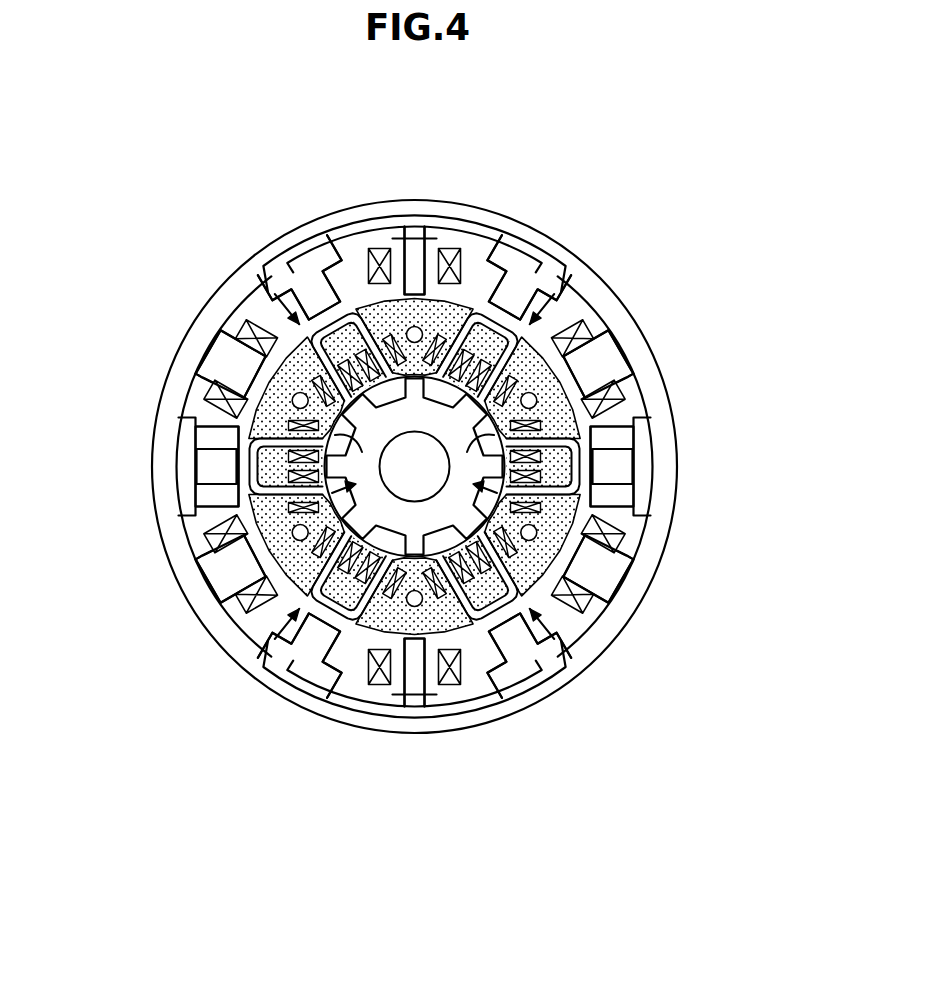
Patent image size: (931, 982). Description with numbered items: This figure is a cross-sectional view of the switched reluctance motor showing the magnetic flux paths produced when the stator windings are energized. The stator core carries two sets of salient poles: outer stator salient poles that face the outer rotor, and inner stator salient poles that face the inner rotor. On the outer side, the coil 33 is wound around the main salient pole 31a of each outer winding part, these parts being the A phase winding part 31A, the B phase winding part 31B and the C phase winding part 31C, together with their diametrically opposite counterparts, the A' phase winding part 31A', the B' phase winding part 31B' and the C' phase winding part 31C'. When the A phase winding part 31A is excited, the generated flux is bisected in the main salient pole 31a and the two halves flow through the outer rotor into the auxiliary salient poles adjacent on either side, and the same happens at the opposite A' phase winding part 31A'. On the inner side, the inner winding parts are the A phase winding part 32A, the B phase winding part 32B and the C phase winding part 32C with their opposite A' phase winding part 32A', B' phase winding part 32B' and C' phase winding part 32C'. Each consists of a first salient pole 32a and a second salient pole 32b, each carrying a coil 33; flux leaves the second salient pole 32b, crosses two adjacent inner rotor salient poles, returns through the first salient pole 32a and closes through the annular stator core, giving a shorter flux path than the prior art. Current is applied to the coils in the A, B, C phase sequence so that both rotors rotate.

The A phase winding part 31A is at (411, 193).
The A' phase winding part 31A' is at (430, 741).
The B phase winding part 31B is at (661, 328).
The B' phase winding part 31B' is at (164, 606).
The C phase winding part 31C is at (673, 576).
The C' phase winding part 31C' is at (154, 351).
The main salient pole 31a is at (418, 262).
The A phase winding part 32A is at (702, 466).
The A' phase winding part 32A' is at (127, 466).
The B phase winding part 32B is at (557, 708).
The B' phase winding part 32B' is at (273, 227).
The C phase winding part 32C is at (271, 703).
The C' phase winding part 32C' is at (556, 227).
The first salient pole 32a is at (520, 300).
The second salient pole 32b is at (372, 316).
The coil 33 is at (380, 250).